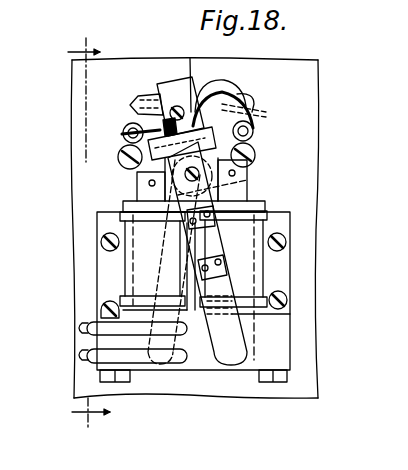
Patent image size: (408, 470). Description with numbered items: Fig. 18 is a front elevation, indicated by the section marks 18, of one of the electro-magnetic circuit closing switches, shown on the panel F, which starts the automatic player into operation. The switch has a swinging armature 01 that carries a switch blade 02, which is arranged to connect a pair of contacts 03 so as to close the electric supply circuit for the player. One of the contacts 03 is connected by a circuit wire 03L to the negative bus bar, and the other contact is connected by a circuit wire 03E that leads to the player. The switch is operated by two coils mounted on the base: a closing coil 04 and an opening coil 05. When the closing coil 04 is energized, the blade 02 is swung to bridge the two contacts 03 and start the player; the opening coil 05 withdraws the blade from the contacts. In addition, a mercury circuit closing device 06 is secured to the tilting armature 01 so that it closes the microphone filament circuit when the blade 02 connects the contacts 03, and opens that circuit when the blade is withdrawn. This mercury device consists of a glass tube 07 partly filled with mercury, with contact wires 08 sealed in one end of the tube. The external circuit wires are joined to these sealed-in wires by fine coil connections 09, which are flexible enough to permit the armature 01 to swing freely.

The panel F is at (318, 62).
The Fig. 18 section indicator 18 is at (89, 234).
The swinging armature 01 is at (247, 172).
The switch blade 02 is at (230, 328).
The contacts 03 is at (105, 333).
The circuit wire 03L is at (80, 328).
The circuit wire 03E is at (76, 364).
The closing coil 04 is at (260, 262).
The opening coil 05 is at (130, 262).
The mercury switch tube 06 is at (187, 87).
The glass tube 07 is at (143, 97).
The contact wires 08 is at (238, 80).
The fine coil connections 09 is at (121, 135).